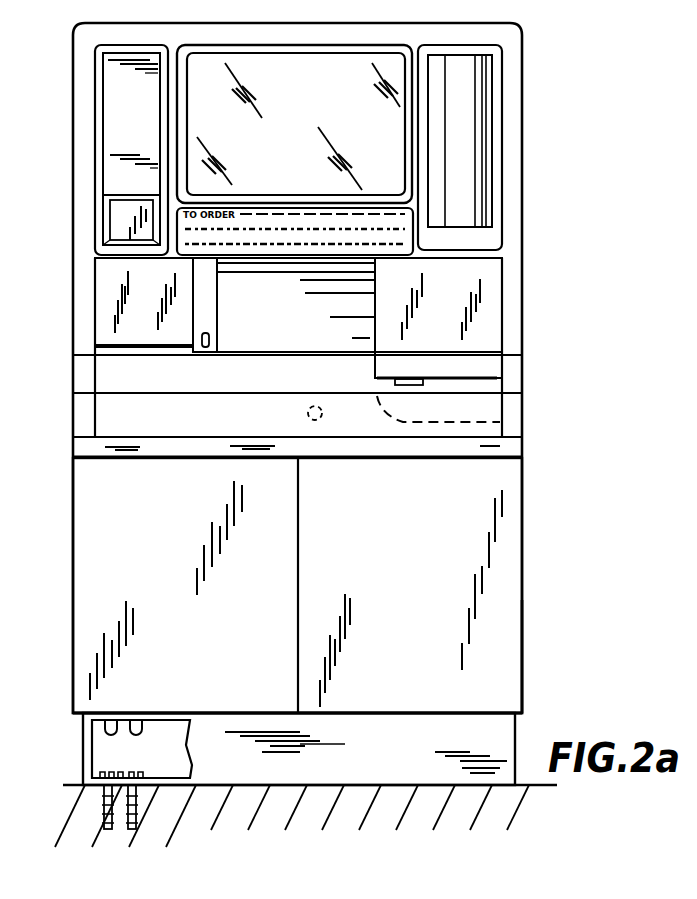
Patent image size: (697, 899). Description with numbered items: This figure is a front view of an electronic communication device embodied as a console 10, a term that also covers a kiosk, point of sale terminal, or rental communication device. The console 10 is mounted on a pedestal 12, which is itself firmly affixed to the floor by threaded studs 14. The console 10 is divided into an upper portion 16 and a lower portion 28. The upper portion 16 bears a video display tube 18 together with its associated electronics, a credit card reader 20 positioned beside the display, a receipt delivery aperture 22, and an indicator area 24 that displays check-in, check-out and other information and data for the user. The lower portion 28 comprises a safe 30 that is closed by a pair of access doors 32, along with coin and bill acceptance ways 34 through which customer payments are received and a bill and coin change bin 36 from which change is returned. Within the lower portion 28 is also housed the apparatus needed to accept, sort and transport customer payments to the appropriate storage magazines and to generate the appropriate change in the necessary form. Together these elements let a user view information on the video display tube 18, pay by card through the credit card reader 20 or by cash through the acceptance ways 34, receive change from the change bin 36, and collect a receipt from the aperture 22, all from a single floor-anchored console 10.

The console 10 is at (540, 88).
The pedestal 12 is at (397, 767).
The threaded studs 14 is at (137, 810).
The upper portion 16 is at (547, 273).
The video display tube 18 is at (303, 146).
The credit card reader 20 is at (467, 158).
The receipt delivery aperture 22 is at (143, 200).
The indicator area 24 is at (148, 136).
The lower portion 28 is at (547, 602).
The safe 30 is at (528, 680).
The access doors 32 is at (205, 624).
The coin and bill acceptance ways 34 is at (115, 343).
The bill and coin change bin 36 is at (453, 378).